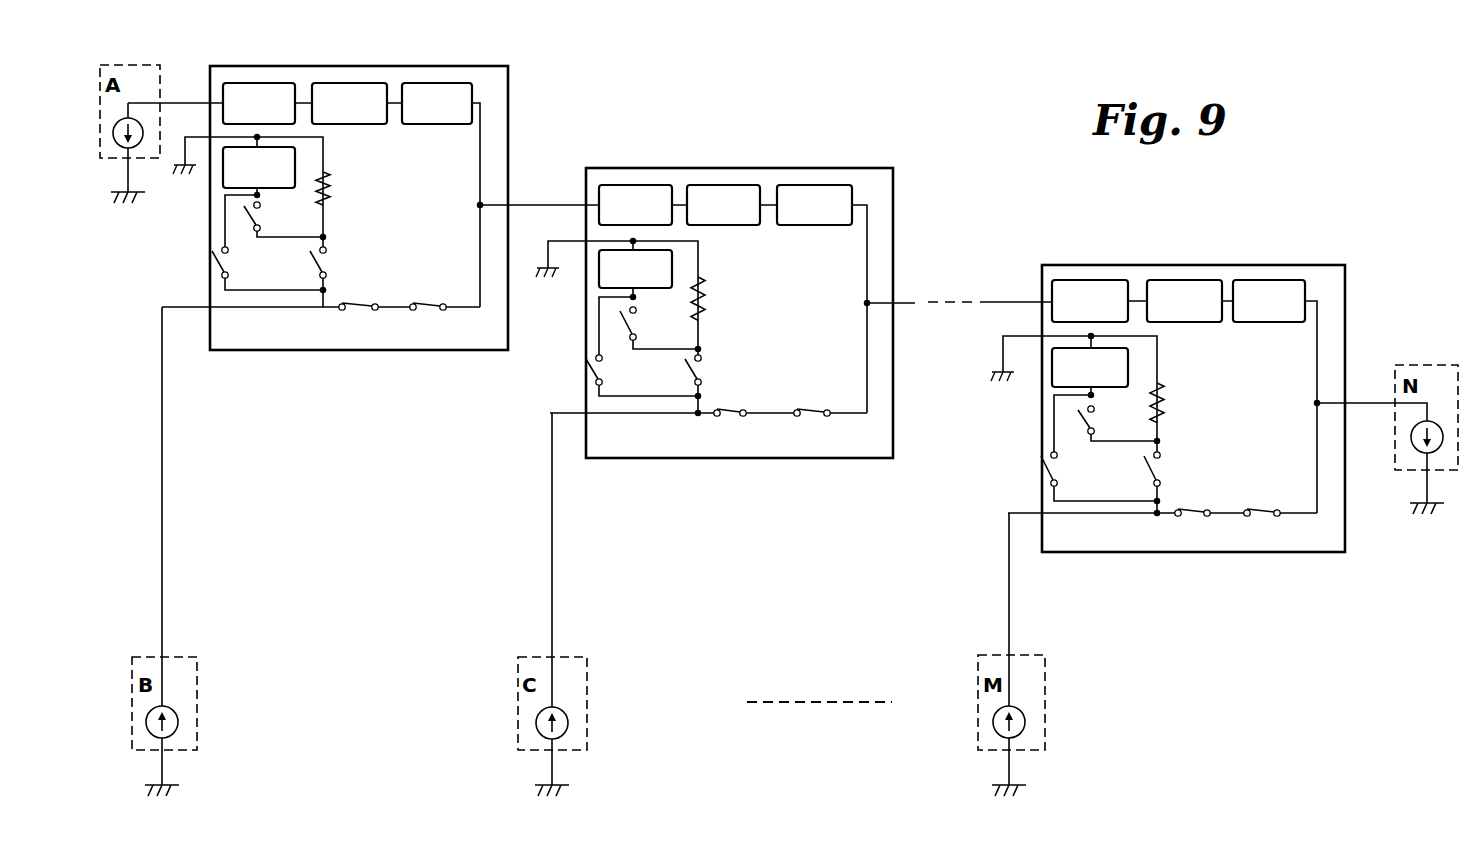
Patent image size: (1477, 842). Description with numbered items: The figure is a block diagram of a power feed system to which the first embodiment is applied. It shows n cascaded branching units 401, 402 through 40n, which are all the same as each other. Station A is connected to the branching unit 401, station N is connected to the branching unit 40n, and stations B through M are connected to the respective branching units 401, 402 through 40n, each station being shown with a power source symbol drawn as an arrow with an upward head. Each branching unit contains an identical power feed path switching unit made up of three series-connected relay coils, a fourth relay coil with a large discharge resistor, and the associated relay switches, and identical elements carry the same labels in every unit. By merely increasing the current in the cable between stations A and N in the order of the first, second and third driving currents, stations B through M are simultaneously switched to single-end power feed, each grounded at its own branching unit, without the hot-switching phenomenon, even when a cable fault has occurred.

The branching unit 401 is at (418, 66).
The branching unit 402 is at (832, 168).
The branching unit 40n is at (1243, 265).